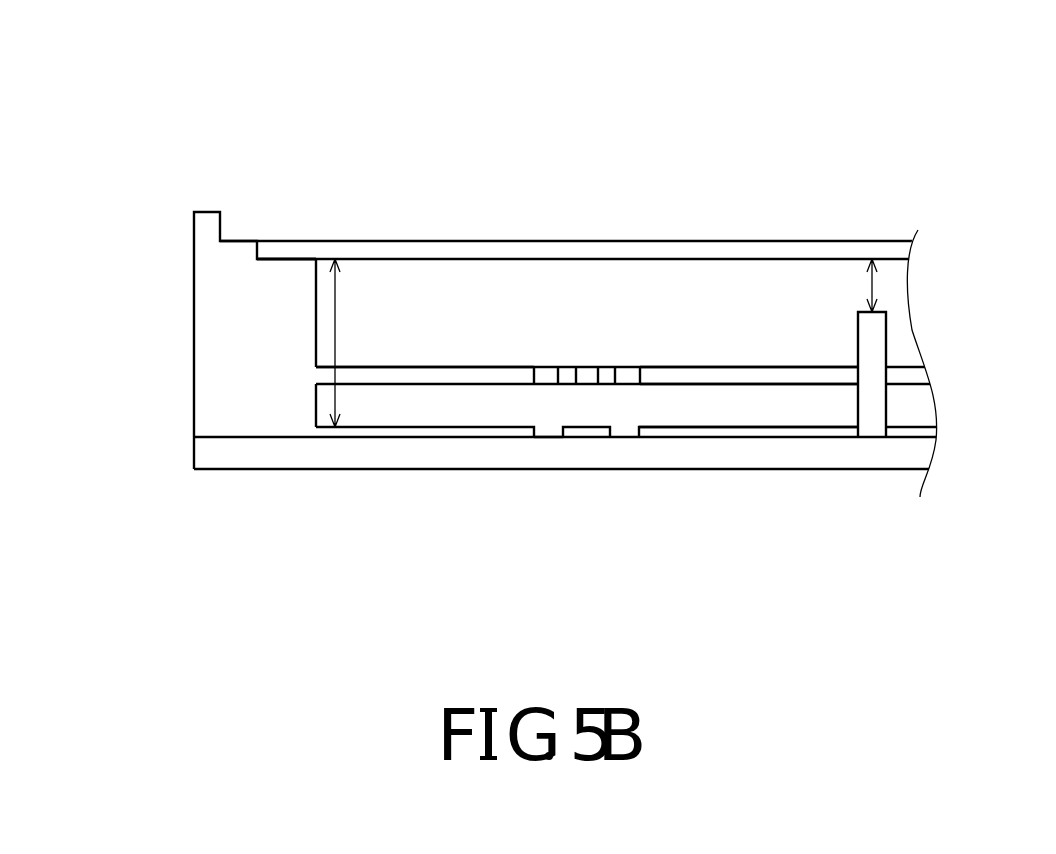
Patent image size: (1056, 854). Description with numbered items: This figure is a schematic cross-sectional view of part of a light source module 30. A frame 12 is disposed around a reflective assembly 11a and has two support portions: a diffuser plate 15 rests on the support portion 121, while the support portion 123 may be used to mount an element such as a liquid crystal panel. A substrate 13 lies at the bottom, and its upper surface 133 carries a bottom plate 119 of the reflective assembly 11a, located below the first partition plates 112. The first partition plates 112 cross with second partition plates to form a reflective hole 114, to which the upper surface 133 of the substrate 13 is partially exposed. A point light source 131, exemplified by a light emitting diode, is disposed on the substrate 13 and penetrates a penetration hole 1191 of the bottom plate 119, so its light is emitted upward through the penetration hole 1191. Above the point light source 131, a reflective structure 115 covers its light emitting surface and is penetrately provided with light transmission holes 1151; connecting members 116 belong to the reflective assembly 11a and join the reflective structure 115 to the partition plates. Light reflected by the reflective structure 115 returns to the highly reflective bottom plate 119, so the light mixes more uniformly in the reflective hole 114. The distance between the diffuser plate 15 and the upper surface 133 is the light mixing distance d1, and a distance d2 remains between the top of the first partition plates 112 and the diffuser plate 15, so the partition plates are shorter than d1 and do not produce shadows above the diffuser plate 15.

The light source module 30 is at (63, 45).
The frame 12 is at (222, 322).
The support portion 123 is at (240, 240).
The support portion 121 is at (287, 257).
The diffuser plate 15 is at (452, 242).
The substrate 13 is at (673, 460).
The reflective structure 115 is at (567, 373).
The light transmission hole 1151 is at (633, 361).
The connecting member 116 is at (710, 377).
The reflective assembly 11a is at (396, 366).
The first partition plate 112 is at (876, 343).
The bottom plate 119 is at (490, 433).
The point light source 131 is at (583, 437).
The penetration hole 1191 is at (556, 445).
The upper surface 133 is at (745, 424).
The reflective hole 114 is at (814, 421).
The light mixing distance d1 is at (336, 408).
The distance d2 is at (872, 283).